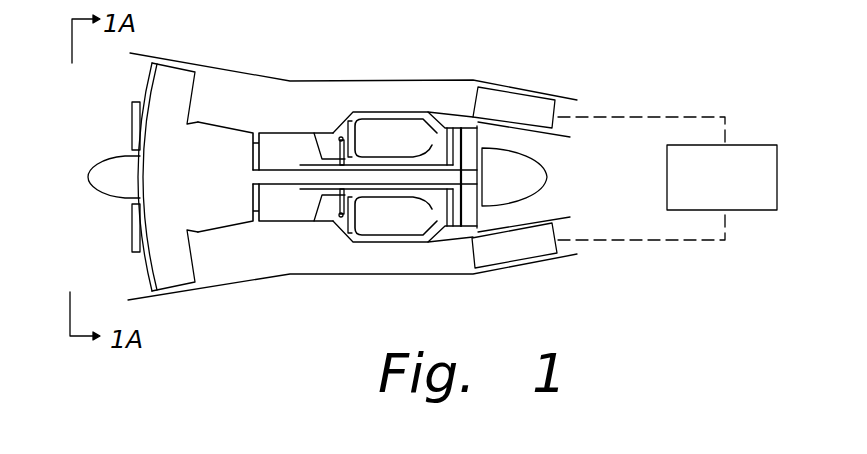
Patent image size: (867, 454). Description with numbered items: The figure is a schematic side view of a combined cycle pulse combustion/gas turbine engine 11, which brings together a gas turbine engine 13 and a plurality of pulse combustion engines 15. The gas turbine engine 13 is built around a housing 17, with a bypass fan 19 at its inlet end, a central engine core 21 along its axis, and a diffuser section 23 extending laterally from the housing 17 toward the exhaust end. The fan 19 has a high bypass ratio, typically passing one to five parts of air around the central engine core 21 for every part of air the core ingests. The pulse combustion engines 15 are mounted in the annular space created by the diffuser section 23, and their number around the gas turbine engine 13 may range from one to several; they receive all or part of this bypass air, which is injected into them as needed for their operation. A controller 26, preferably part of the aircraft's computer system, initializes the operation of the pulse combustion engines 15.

The combined cycle pulse combustion/gas turbine engine 11 is at (508, 34).
The gas turbine engine 13 is at (233, 72).
The pulse combustion engines 15 is at (532, 105).
The housing 17 is at (260, 279).
The bypass fan 19 is at (170, 278).
The central engine core 21 is at (380, 243).
The diffuser section 23 is at (317, 262).
The controller 26 is at (748, 145).